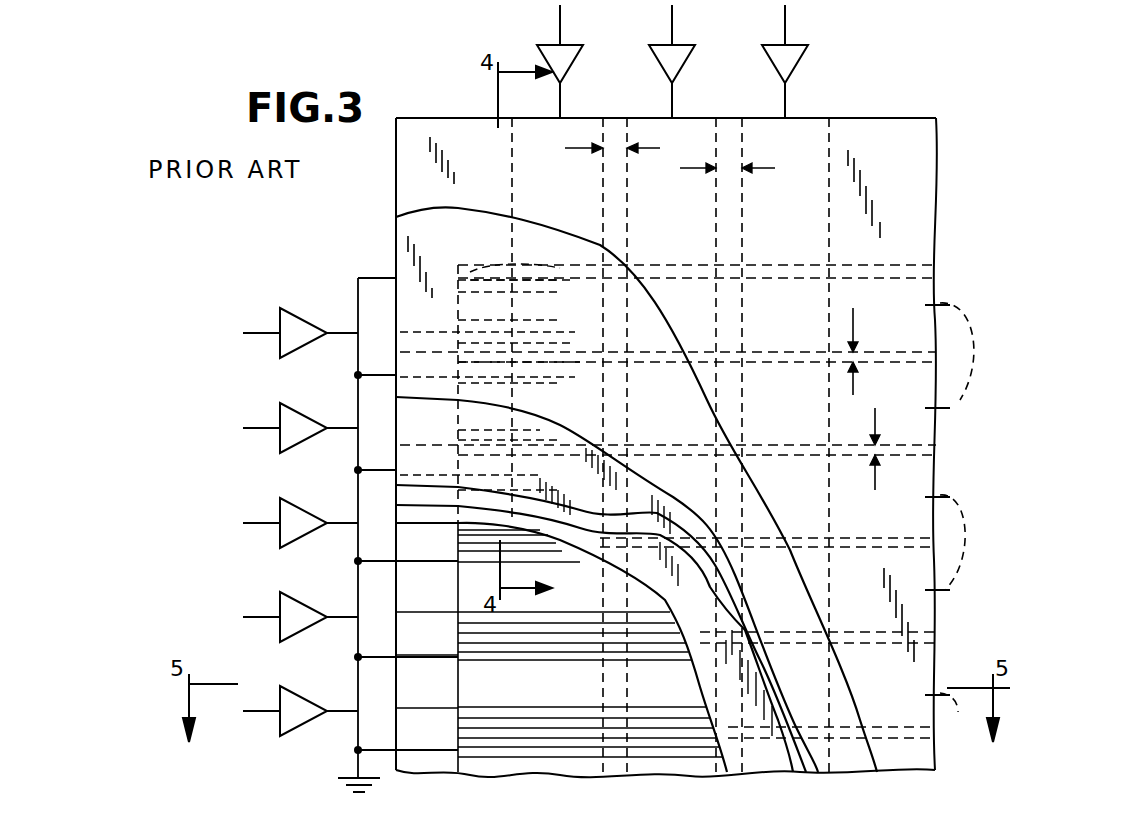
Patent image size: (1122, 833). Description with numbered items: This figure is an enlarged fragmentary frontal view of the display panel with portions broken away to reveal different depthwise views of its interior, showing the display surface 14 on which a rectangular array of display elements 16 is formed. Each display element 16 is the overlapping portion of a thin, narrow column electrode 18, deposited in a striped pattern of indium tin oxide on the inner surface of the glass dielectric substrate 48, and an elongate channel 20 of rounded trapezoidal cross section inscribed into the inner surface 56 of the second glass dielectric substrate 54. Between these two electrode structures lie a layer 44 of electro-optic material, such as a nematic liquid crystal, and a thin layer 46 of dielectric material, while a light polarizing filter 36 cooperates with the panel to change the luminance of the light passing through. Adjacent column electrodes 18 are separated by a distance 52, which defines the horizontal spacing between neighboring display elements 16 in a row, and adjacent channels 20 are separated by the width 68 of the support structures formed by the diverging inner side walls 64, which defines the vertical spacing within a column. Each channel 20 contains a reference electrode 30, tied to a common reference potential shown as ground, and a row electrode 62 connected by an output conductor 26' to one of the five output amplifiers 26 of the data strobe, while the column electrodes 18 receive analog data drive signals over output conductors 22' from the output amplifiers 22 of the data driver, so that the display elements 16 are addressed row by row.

The display surface 14 is at (396, 157).
The display element 16 is at (574, 236).
The column electrode 18 is at (638, 118).
The channel 20 is at (693, 504).
The output amplifier 22 is at (686, 61).
The output conductor 22' is at (654, 96).
The output amplifier 26 is at (347, 526).
The output conductor 26' is at (306, 477).
The reference electrode 30 is at (572, 284).
The light polarizing filter 36 is at (396, 197).
The layer of electro-optic material 44 is at (396, 400).
The layer of dielectric material 46 is at (396, 490).
The glass dielectric substrate 48 is at (396, 234).
The spacing distance 52 is at (608, 148).
The glass dielectric substrate 54 is at (396, 537).
The inner surface 56 is at (900, 356).
The row electrode 62 is at (528, 330).
The inner side wall 64 is at (508, 266).
The width 68 is at (878, 448).